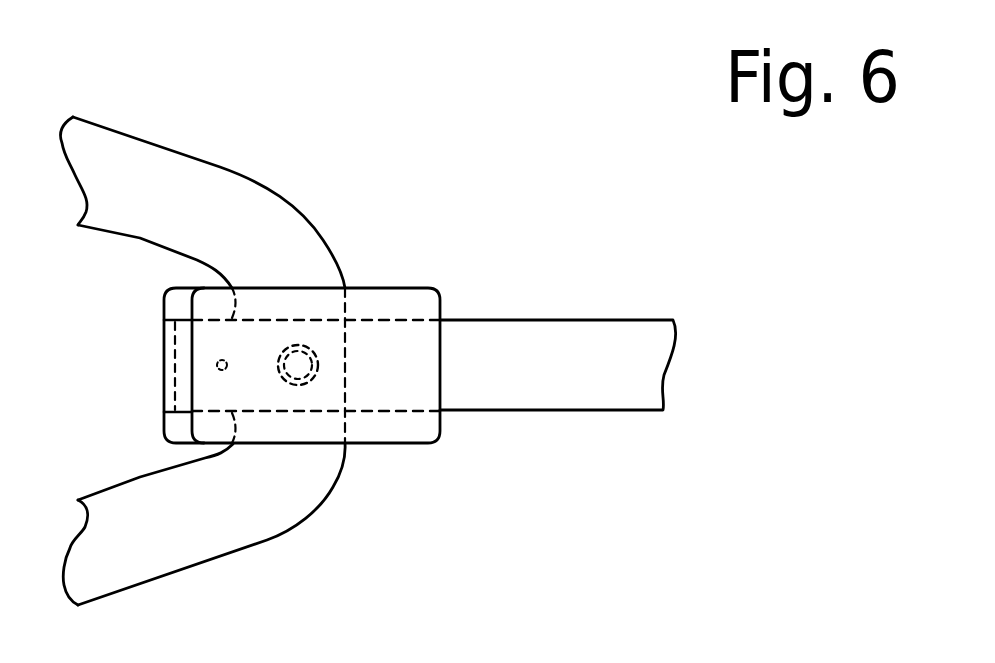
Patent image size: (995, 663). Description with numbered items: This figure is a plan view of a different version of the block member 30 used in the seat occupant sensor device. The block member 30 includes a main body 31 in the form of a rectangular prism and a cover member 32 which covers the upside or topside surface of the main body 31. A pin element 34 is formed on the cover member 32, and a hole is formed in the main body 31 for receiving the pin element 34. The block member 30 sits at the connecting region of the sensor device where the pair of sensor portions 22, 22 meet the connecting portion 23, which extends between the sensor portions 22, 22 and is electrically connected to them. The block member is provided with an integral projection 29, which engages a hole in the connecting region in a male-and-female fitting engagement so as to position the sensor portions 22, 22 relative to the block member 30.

The sensor portions 22 is at (158, 155).
The connecting portion 23 is at (590, 337).
The projection 29 is at (212, 362).
The block member 30 is at (410, 262).
The main body 31 is at (172, 427).
The cover member 32 is at (398, 427).
The pin element 34 is at (310, 347).